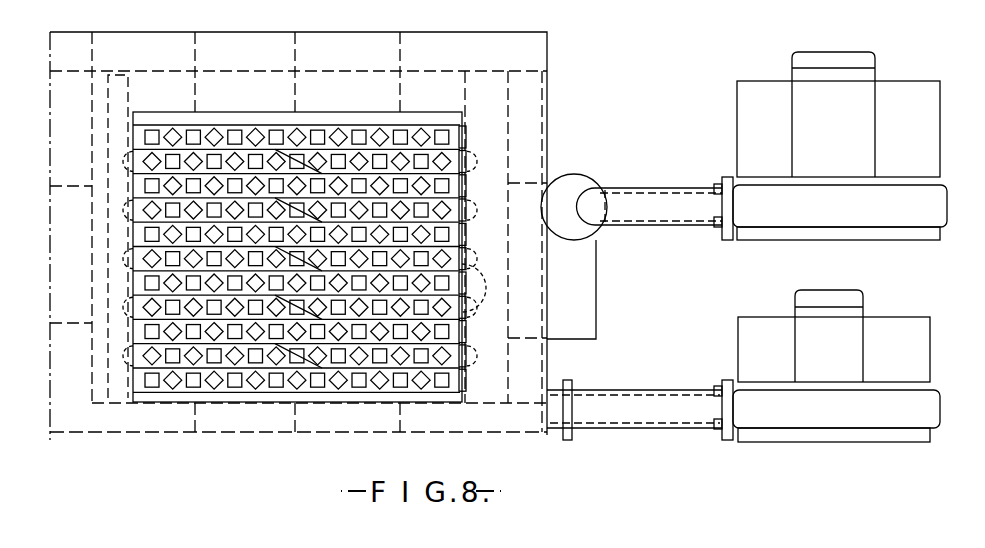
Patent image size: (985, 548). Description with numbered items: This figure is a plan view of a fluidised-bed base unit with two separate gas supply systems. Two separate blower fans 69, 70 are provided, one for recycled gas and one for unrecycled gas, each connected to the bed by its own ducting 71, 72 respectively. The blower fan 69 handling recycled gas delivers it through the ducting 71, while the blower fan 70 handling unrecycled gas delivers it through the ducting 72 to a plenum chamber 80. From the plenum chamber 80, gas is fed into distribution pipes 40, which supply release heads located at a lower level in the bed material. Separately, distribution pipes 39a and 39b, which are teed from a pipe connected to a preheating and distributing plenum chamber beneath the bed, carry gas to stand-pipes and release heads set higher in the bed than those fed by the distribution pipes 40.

The distribution pipe 39a is at (120, 306).
The distribution pipe 39b is at (486, 258).
The distribution pipes 40 is at (120, 238).
The blower fan 69 is at (920, 149).
The blower fan 70 is at (917, 372).
The ducting 71 is at (675, 210).
The ducting 72 is at (661, 400).
The plenum chamber 80 is at (497, 395).